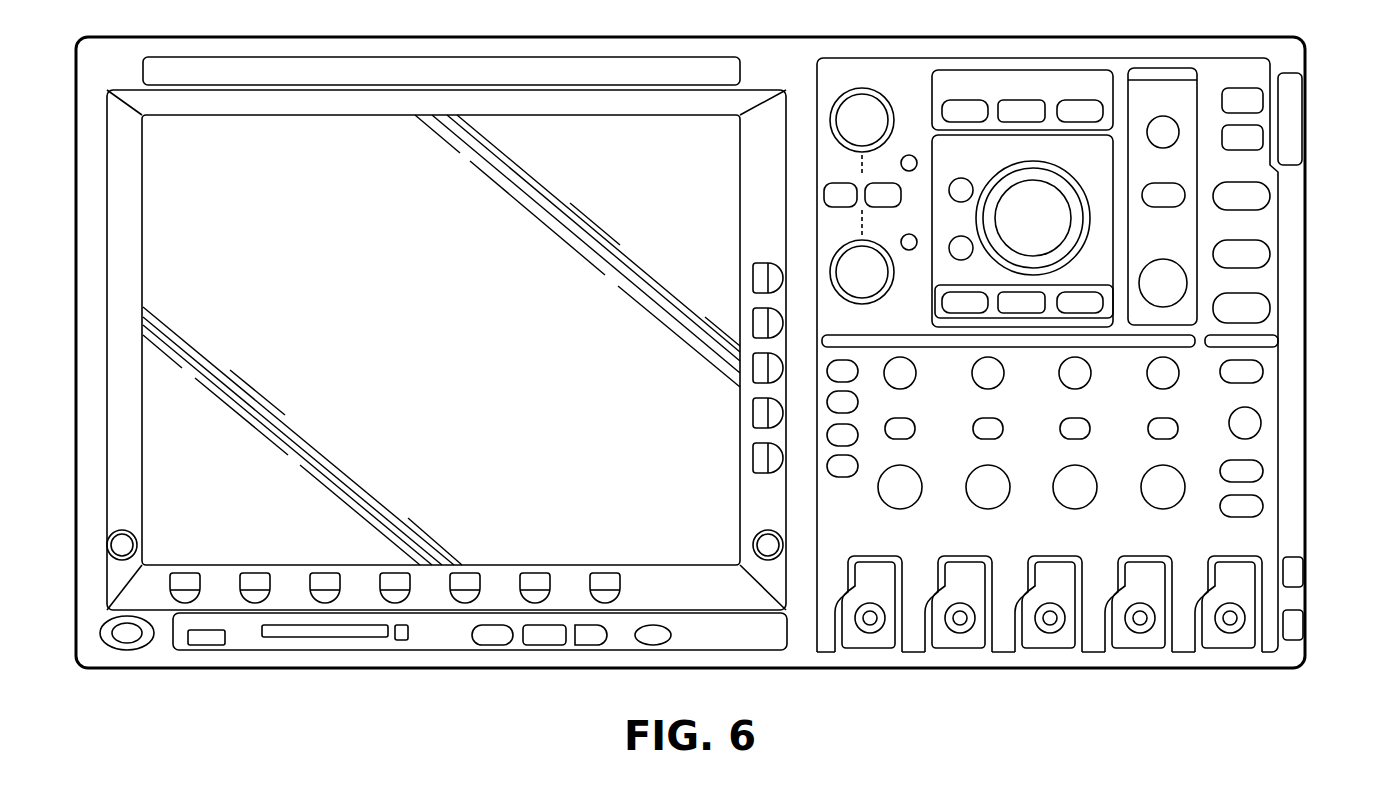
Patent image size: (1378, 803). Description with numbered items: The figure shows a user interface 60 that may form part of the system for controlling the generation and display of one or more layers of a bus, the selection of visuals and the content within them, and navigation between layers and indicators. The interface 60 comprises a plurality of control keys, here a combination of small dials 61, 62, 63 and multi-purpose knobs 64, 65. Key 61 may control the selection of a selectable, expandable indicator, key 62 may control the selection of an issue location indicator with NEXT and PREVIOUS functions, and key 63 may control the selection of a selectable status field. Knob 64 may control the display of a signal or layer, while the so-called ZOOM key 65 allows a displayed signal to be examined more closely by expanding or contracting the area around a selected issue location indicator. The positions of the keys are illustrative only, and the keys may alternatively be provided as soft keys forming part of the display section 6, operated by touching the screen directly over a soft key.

The display section 6 is at (451, 343).
The user interface 60 is at (766, 252).
The control key 61 is at (1083, 386).
The control key 62 is at (996, 386).
The control key 63 is at (908, 386).
The multi-purpose knob 64 is at (855, 90).
The ZOOM key 65 is at (856, 303).